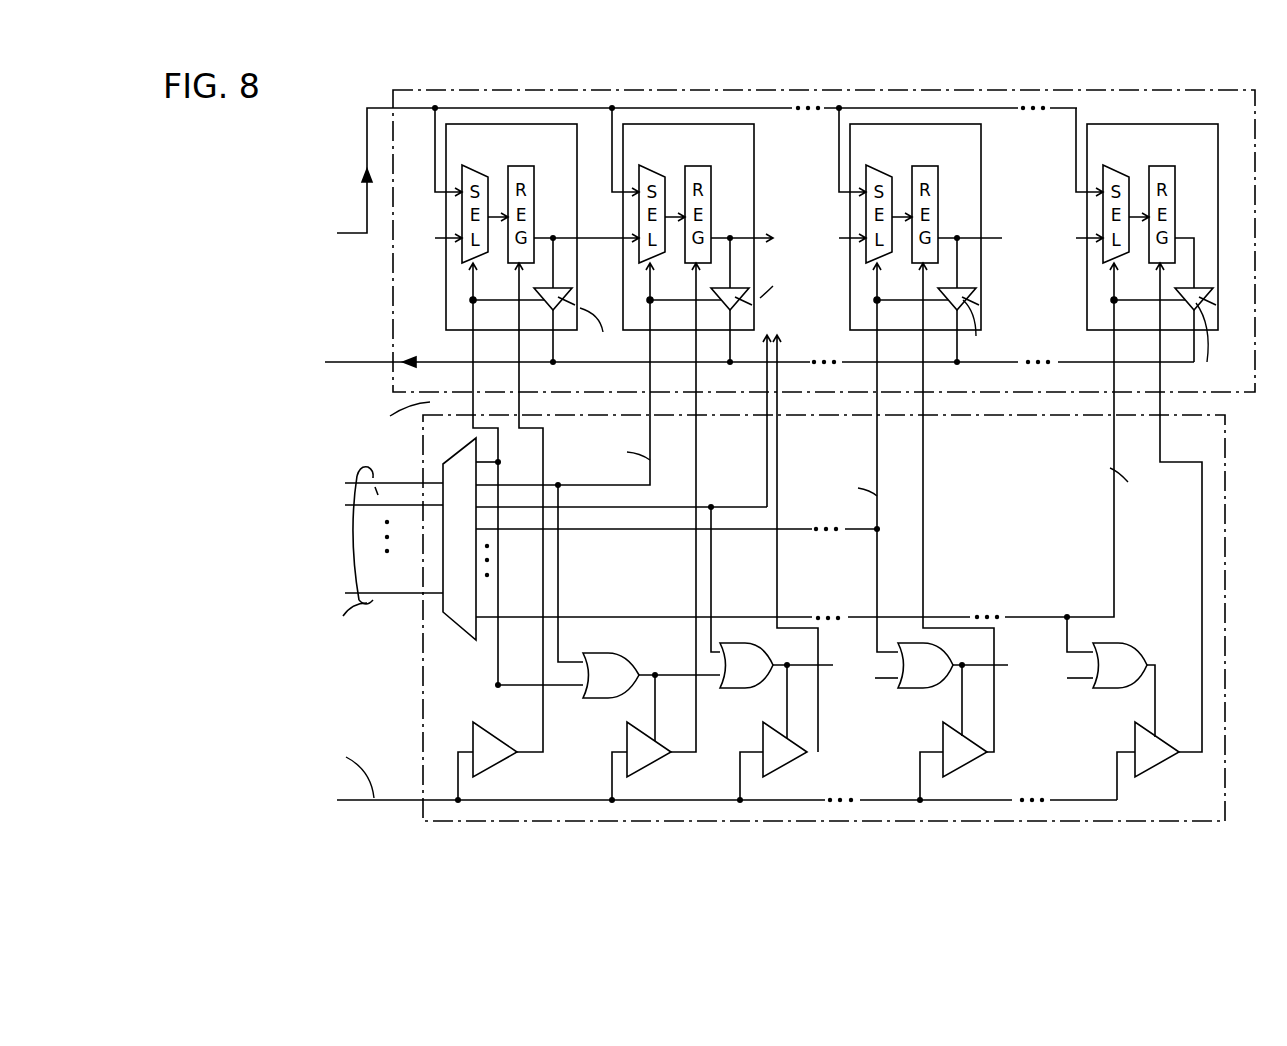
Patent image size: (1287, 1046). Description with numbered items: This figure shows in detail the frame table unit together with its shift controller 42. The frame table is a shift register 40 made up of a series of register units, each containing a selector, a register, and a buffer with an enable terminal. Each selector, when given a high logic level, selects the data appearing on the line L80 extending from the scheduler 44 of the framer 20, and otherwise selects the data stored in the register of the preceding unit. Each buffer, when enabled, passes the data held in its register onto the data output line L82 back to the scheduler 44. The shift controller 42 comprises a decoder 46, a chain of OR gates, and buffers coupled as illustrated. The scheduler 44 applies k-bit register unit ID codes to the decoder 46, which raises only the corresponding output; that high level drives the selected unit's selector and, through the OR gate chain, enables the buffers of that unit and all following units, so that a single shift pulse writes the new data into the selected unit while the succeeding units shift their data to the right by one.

The scheduler 44 is at (320, 520).
The framer 20 is at (263, 473).
The line L80 is at (365, 146).
The data output line L82 is at (367, 360).
The shift register 40 is at (998, 318).
The shift controller 42 is at (1063, 522).
The decoder 46 is at (455, 629).